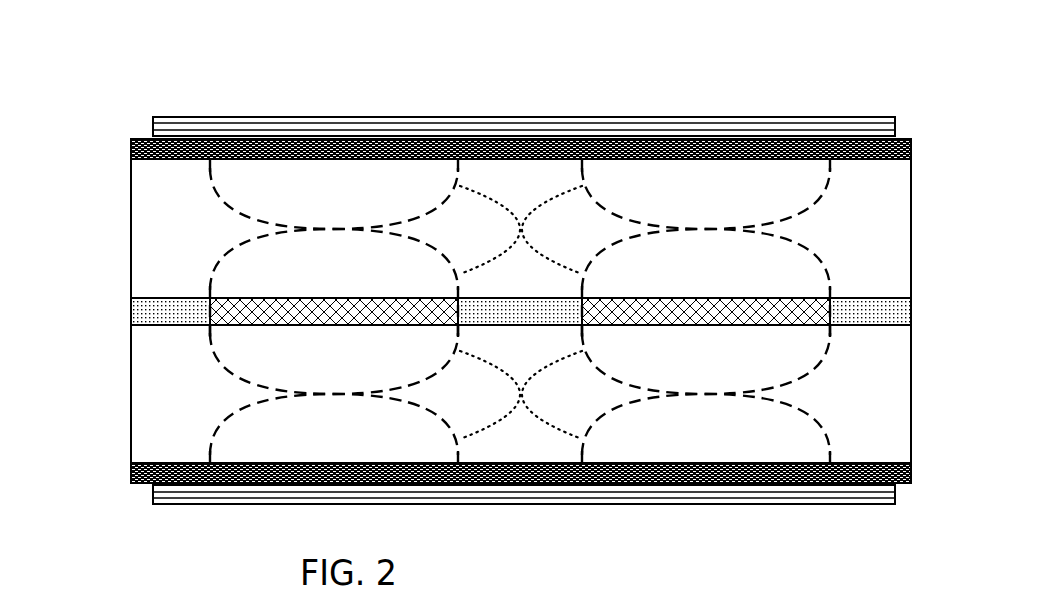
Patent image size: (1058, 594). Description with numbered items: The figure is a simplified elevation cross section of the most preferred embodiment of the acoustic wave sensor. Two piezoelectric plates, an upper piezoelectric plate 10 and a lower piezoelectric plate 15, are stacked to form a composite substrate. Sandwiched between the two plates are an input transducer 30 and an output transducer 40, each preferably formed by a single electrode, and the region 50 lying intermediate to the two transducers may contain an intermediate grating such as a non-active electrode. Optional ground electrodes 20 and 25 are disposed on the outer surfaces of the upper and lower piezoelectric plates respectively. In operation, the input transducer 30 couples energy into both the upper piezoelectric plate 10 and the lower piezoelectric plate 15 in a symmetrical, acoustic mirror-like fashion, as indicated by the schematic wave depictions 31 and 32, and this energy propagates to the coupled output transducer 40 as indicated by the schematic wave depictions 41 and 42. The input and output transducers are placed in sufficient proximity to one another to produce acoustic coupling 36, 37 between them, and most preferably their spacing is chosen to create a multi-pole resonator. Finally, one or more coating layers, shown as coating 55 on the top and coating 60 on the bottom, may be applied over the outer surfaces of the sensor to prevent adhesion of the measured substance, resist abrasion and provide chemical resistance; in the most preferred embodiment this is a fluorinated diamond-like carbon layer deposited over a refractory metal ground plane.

The piezoelectric plate 10 is at (130, 237).
The piezoelectric plate 15 is at (130, 427).
The ground electrode 20 is at (138, 140).
The ground electrode 25 is at (131, 473).
The input transducer 30 is at (212, 308).
The schematic wave depiction 31 is at (210, 184).
The schematic wave depiction 32 is at (210, 440).
The acoustic coupling 36 is at (532, 412).
The acoustic coupling 37 is at (561, 187).
The output transducer 40 is at (832, 308).
The schematic wave depiction 41 is at (830, 173).
The schematic wave depiction 42 is at (827, 433).
The region intermediate to the two transducers 50 is at (518, 298).
The coating 55 is at (498, 118).
The coating 60 is at (495, 500).